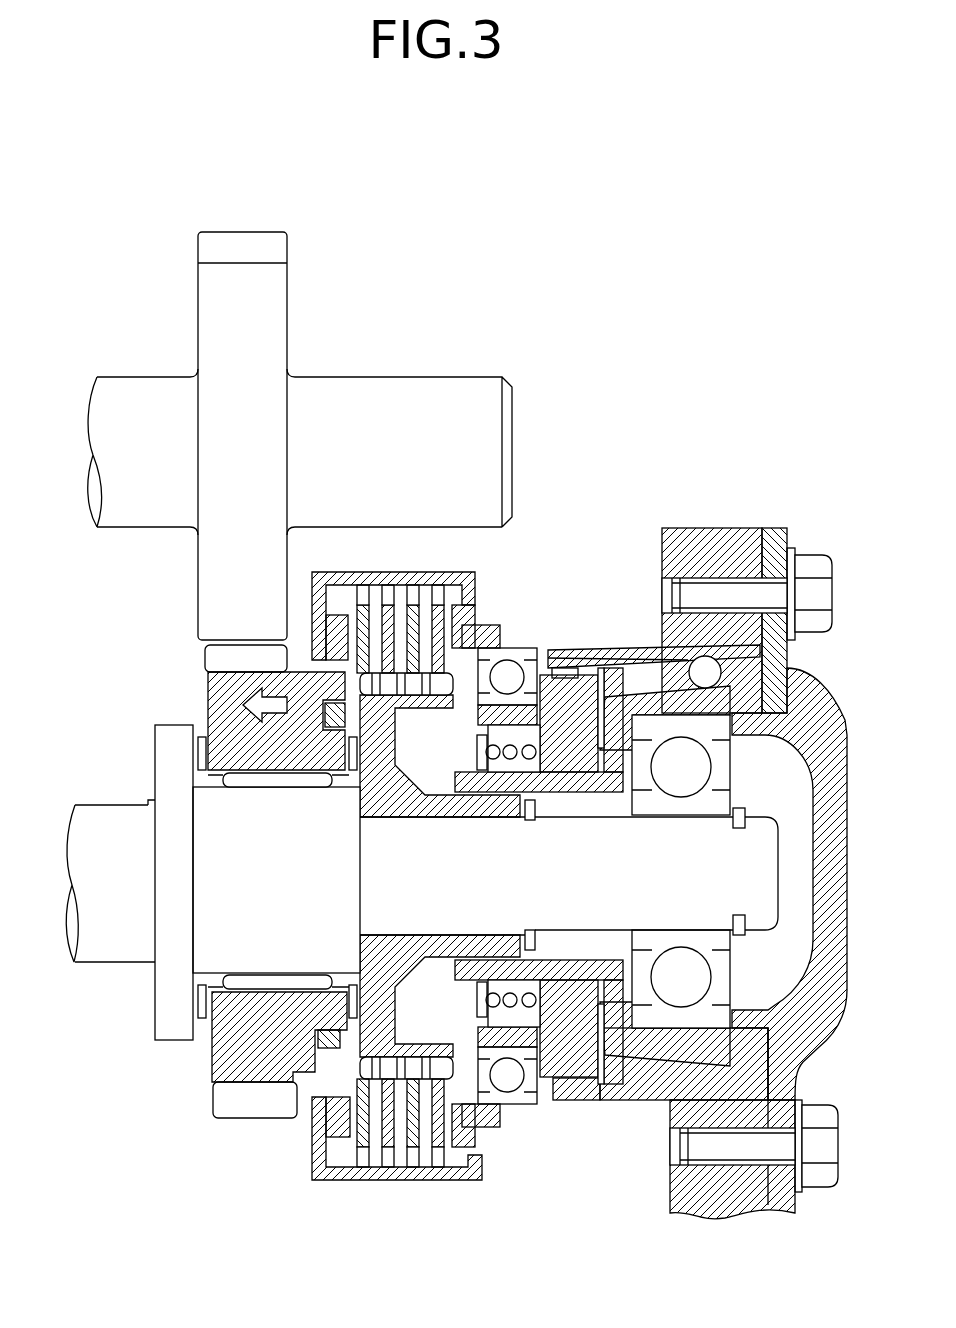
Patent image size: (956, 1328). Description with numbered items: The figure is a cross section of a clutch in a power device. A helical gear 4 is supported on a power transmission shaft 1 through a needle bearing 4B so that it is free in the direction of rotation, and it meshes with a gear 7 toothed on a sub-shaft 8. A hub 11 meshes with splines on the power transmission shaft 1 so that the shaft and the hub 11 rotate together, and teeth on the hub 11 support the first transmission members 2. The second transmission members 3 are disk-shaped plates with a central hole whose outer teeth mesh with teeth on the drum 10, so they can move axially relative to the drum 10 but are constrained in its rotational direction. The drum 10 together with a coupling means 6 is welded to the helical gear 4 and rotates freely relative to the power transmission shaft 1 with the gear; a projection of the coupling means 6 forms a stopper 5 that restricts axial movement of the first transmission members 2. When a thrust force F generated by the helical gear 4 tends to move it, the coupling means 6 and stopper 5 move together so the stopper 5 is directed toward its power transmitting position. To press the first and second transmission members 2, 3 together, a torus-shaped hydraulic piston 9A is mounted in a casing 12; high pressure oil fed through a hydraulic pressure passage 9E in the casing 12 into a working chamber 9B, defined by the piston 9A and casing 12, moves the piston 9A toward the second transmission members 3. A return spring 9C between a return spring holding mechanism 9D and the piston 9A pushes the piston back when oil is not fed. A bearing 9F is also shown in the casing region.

The power transmission shaft 1 is at (107, 805).
The first transmission members 2 is at (380, 600).
The second transmission members 3 is at (360, 590).
The helical gear 4 is at (208, 700).
The needle bearing 4B is at (273, 790).
The stopper 5 is at (320, 575).
The coupling means 6 is at (330, 705).
The gear 7 is at (200, 606).
The sub-shaft 8 is at (132, 377).
The hydraulic piston 9A is at (598, 665).
The working chamber 9B is at (590, 780).
The return spring 9C is at (508, 760).
The return spring holding mechanism 9D is at (483, 790).
The hydraulic pressure passage 9E is at (712, 665).
The release bearing 9F is at (525, 660).
The drum 10 is at (470, 570).
The hub 11 is at (393, 805).
The casing 12 is at (683, 527).
The thrust force F is at (265, 688).